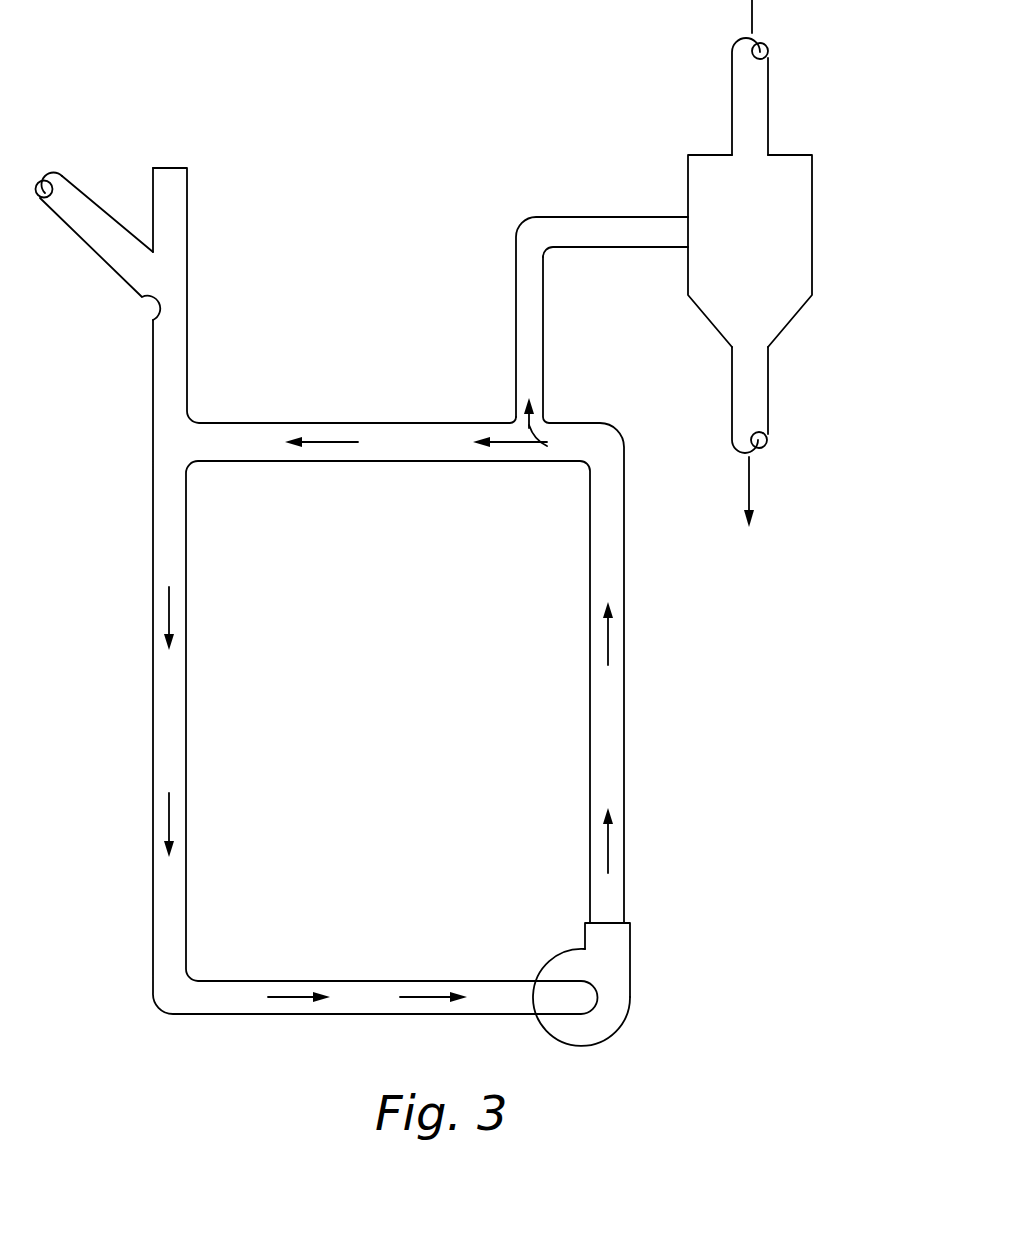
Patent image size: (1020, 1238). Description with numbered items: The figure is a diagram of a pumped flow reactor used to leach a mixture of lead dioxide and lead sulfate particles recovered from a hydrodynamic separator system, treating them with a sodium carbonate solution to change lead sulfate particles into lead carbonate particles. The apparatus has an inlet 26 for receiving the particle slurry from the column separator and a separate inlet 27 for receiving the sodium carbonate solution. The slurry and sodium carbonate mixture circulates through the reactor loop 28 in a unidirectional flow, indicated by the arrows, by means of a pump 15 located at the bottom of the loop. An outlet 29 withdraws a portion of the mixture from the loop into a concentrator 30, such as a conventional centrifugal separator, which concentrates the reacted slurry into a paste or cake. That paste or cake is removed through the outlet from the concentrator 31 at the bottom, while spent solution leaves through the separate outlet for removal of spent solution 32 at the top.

The pump 15 is at (630, 987).
The inlet 26 is at (52, 170).
The inlet 27 is at (170, 165).
The circulation loop pipe 28 is at (152, 677).
The outlet 29 is at (516, 293).
The concentrator 30 is at (812, 222).
The outlet from the concentrator 31 is at (768, 393).
The outlet for removal of spent solution 32 is at (768, 100).